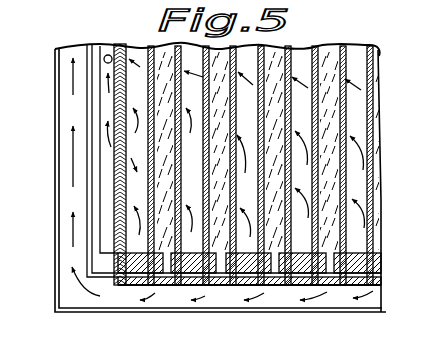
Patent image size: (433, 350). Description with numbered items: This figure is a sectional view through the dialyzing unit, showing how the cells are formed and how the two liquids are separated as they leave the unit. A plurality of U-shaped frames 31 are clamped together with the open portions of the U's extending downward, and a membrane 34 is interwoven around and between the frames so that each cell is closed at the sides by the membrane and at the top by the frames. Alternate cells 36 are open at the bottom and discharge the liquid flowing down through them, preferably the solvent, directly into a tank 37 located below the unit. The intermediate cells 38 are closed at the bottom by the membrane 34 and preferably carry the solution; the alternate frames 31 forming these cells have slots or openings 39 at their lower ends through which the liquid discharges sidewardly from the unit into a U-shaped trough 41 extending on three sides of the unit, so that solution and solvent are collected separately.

The U-shaped frame 31 is at (135, 287).
The membrane 34 is at (181, 54).
The open cell 36 is at (135, 53).
The tank 37 is at (107, 190).
The closed cell 38 is at (331, 188).
The slot or opening 39 is at (167, 287).
The U-shaped trough 41 is at (68, 118).